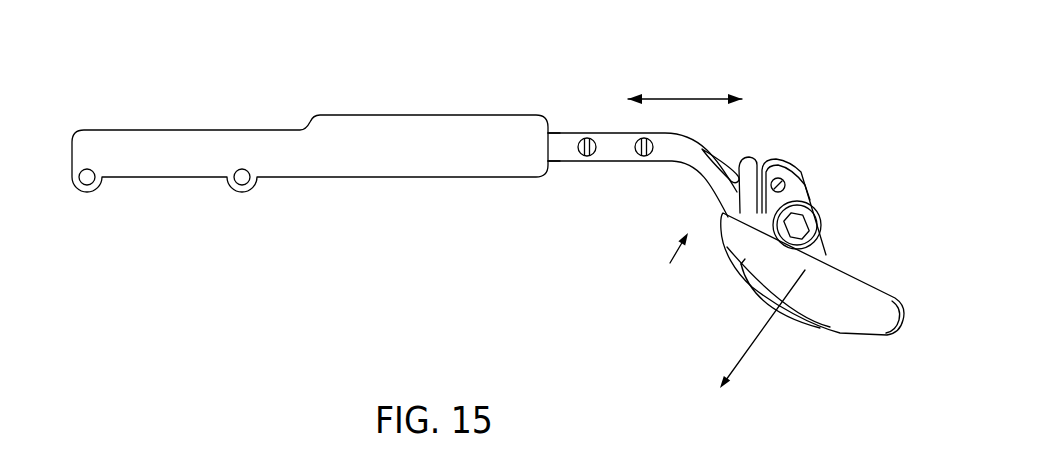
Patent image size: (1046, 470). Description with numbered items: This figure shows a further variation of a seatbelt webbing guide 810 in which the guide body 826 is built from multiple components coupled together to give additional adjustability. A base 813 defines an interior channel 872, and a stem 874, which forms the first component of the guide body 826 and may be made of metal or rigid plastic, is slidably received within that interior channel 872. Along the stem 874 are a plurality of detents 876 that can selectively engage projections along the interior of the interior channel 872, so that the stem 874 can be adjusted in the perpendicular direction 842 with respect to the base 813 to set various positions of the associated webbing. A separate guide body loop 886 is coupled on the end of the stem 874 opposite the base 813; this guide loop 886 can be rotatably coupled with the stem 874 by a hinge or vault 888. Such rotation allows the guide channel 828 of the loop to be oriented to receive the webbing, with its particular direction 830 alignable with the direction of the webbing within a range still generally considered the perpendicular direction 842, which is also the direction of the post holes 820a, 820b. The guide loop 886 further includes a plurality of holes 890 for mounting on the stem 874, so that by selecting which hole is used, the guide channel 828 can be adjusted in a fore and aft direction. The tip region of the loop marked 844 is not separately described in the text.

The webbing guide 810 is at (769, 49).
The base 813 is at (177, 162).
The post hole 820a is at (243, 181).
The post hole 820b is at (86, 181).
The guide body 826 is at (663, 262).
The guide channel 828 is at (812, 312).
The direction 830 is at (745, 348).
The perpendicular direction 842 is at (684, 96).
The distal tip 844 is at (906, 308).
The interior channel 872 is at (557, 140).
The stem 874 is at (615, 156).
The detents 876 is at (578, 158).
The guide body loop 886 is at (835, 282).
The vault 888 is at (803, 219).
The holes 890 is at (781, 179).